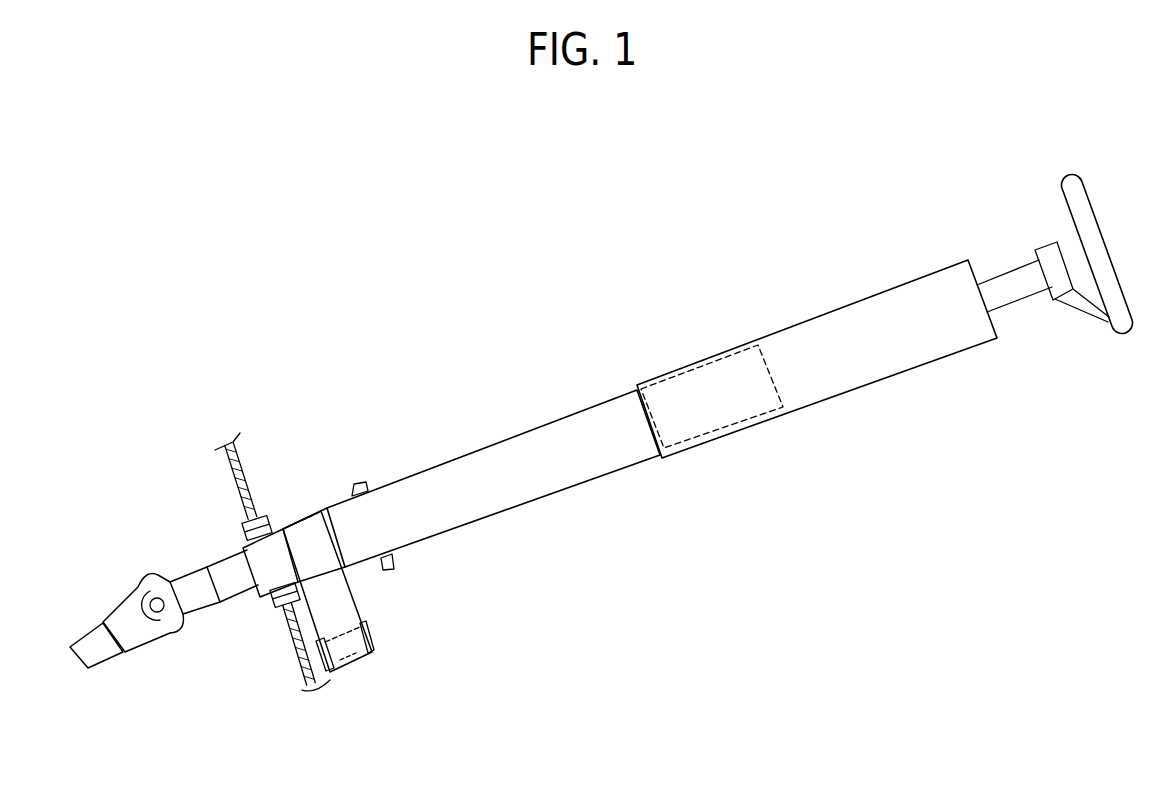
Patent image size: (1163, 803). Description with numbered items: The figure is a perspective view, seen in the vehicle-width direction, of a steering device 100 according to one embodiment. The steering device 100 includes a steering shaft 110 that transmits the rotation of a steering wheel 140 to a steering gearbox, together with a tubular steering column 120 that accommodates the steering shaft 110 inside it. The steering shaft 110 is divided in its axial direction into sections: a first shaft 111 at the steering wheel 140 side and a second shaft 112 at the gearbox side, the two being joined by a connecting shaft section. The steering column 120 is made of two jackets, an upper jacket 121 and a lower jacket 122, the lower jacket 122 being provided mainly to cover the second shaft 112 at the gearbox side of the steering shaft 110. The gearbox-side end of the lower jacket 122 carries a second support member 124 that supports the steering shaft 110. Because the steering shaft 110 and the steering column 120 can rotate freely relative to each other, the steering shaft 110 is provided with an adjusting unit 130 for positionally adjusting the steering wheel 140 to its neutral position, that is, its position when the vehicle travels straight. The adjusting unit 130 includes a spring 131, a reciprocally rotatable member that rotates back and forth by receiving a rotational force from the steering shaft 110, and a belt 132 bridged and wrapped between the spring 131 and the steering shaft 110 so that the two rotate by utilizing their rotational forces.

The steering device 100 is at (568, 243).
The steering shaft 110 is at (629, 431).
The first shaft 111 is at (1007, 282).
The second shaft 112 is at (262, 557).
The steering column 120 is at (703, 324).
The upper jacket 121 is at (688, 385).
The lower jacket 122 is at (600, 416).
The second support member 124 is at (362, 483).
The adjusting unit 130 is at (382, 661).
The spring 131 is at (368, 632).
The belt 132 is at (348, 657).
The steering wheel 140 is at (1096, 189).